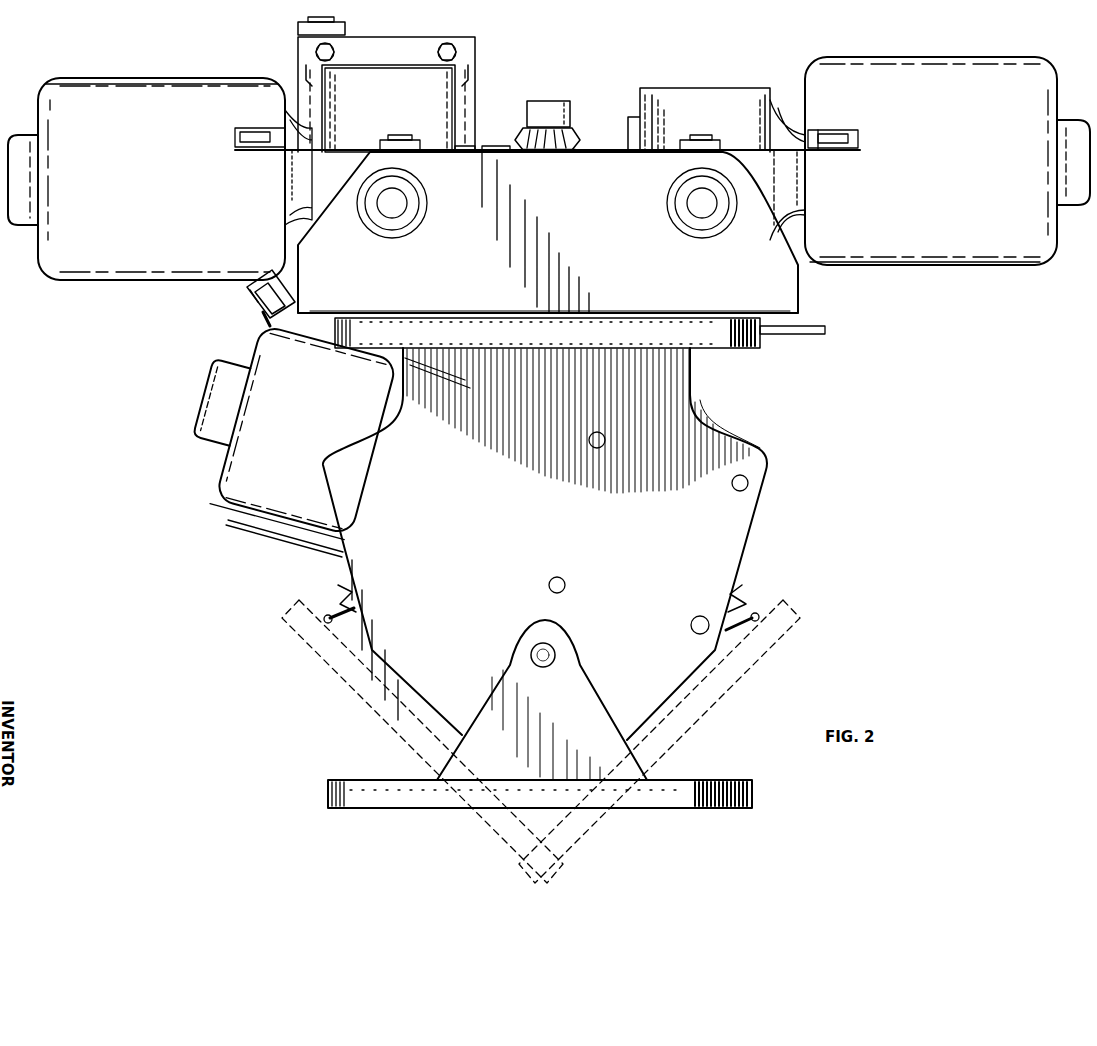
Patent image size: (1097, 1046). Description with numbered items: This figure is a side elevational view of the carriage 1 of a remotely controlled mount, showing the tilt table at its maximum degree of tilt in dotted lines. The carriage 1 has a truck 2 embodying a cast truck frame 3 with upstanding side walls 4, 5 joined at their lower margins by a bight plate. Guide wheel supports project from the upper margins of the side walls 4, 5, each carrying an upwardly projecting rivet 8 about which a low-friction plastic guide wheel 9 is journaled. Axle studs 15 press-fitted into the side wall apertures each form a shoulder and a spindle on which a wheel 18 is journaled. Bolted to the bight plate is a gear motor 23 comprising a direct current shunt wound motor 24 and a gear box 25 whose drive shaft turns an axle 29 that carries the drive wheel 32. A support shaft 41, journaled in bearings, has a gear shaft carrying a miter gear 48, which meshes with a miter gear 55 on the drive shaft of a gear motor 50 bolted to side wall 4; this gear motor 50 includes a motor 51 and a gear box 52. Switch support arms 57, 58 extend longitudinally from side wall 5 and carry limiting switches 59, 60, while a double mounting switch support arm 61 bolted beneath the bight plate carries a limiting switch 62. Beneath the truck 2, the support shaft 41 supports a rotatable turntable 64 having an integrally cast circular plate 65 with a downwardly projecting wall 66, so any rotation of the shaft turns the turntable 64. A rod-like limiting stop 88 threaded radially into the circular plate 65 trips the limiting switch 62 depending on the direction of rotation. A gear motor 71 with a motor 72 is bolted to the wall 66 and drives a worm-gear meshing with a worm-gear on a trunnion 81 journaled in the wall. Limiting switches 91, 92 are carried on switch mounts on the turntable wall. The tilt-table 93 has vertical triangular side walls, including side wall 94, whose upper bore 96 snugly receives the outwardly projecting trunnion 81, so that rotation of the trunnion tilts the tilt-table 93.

The carriage 1 is at (206, 339).
The truck 2 is at (802, 301).
The truck frame 3 is at (800, 284).
The side wall 4 is at (476, 74).
The side wall 5 is at (778, 255).
The rivet 8 is at (692, 138).
The guide wheel 9 is at (345, 28).
The axle stud 15 is at (404, 212).
The wheel 18 is at (366, 222).
The gear motor 23 is at (958, 266).
The direct current shunt wound motor 24 is at (906, 58).
The gear box 25 is at (652, 88).
The axle 29 is at (690, 212).
The drive wheel 32 is at (730, 228).
The support shaft 41 is at (556, 152).
The miter gear 48 is at (571, 106).
The gear motor 50 is at (145, 78).
The direct current shunt wound motor 51 is at (206, 78).
The gear box 52 is at (400, 62).
The miter gear 55 is at (500, 146).
The switch support arm 57 is at (838, 153).
The switch support arm 58 is at (260, 152).
The limiting switch 59 is at (838, 138).
The limiting switch 60 is at (260, 135).
The double mounting switch support arm 61 is at (285, 300).
The limiting switch 62 is at (254, 296).
The turntable 64 is at (770, 493).
The circular plate 65 is at (676, 318).
The wall 66 is at (744, 440).
The gear motor 71 is at (246, 535).
The direct current shunt wound motor 72 is at (306, 550).
The trunnion 81 is at (530, 650).
The limiting stop 88 is at (820, 334).
The limiting switch 91 is at (744, 588).
The limiting switch 92 is at (338, 586).
The tilt-table 93 is at (690, 781).
The triangular side wall 94 is at (596, 677).
The bore 96 is at (560, 648).